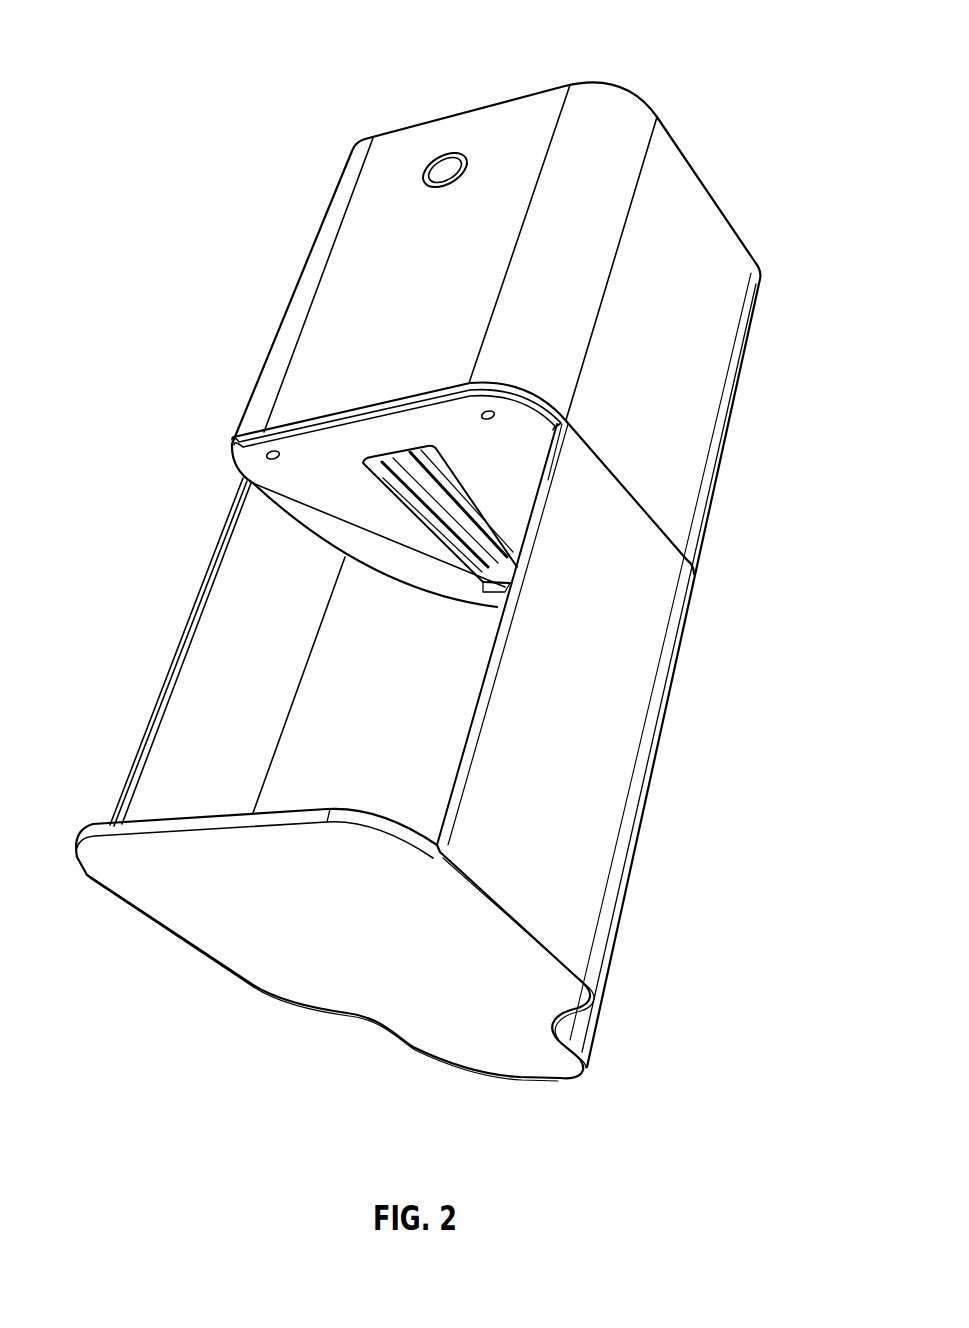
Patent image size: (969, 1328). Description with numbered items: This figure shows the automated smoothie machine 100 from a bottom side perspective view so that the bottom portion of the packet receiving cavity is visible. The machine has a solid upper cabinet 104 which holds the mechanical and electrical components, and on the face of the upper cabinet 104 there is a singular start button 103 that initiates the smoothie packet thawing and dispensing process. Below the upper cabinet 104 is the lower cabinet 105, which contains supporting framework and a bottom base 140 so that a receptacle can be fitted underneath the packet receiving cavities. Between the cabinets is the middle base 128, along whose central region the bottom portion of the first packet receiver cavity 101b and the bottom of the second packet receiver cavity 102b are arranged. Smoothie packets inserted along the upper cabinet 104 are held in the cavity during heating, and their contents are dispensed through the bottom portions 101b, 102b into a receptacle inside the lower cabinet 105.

The automated smoothie machine 100 is at (708, 55).
The start button 103 is at (428, 167).
The upper cabinet 104 is at (693, 397).
The lower cabinet 105 is at (590, 790).
The middle base 128 is at (302, 463).
The bottom portion of first packet receiver cavity 101b is at (385, 478).
The bottom portion of second packet receiver cavity 102b is at (490, 555).
The bottom base 140 is at (217, 932).